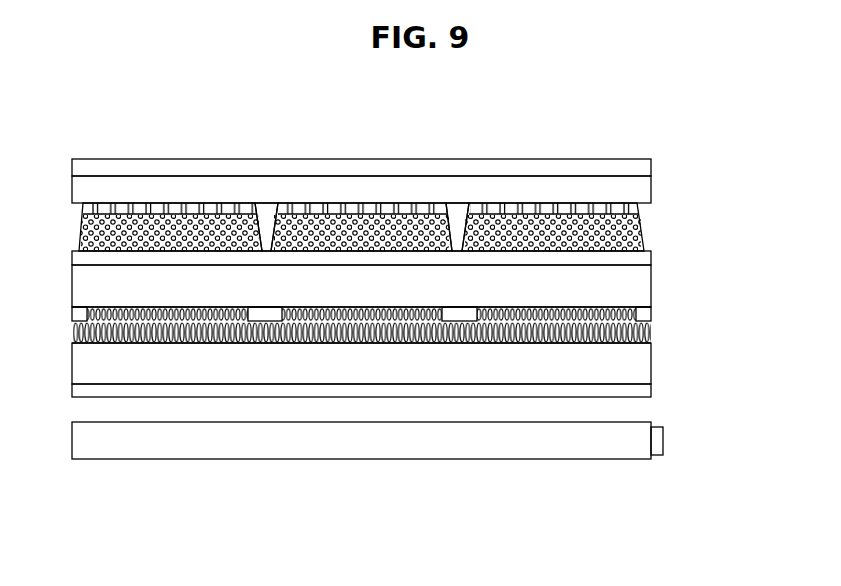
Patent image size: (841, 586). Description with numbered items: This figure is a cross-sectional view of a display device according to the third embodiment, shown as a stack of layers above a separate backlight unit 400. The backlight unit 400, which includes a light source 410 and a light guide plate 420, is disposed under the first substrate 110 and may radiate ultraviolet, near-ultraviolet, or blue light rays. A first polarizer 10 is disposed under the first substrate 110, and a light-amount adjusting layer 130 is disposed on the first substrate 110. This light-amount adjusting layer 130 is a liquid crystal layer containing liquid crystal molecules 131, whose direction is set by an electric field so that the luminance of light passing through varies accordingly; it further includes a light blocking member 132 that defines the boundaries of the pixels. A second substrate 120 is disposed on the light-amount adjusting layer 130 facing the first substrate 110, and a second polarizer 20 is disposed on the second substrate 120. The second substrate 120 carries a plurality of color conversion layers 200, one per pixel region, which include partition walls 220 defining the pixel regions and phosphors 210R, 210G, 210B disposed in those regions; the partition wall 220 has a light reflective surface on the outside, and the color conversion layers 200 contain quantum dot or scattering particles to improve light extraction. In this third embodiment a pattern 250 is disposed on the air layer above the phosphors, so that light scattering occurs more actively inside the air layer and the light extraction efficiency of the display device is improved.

The first polarizer 10 is at (637, 390).
The second polarizer 20 is at (638, 166).
The first substrate 110 is at (637, 365).
The second substrate 120 is at (637, 186).
The light-amount adjusting layer 130 is at (423, 326).
The liquid crystal molecules 131 is at (648, 335).
The light blocking member 132 is at (642, 312).
The color conversion layers 200 is at (400, 186).
The red phosphor 210R is at (201, 228).
The green phosphor 210G is at (325, 228).
The blue phosphor 210B is at (520, 228).
The partition wall 220 is at (458, 226).
The pattern 250 is at (114, 211).
The backlight unit 400 is at (371, 488).
The light source 410 is at (655, 469).
The light guide plate 420 is at (607, 451).